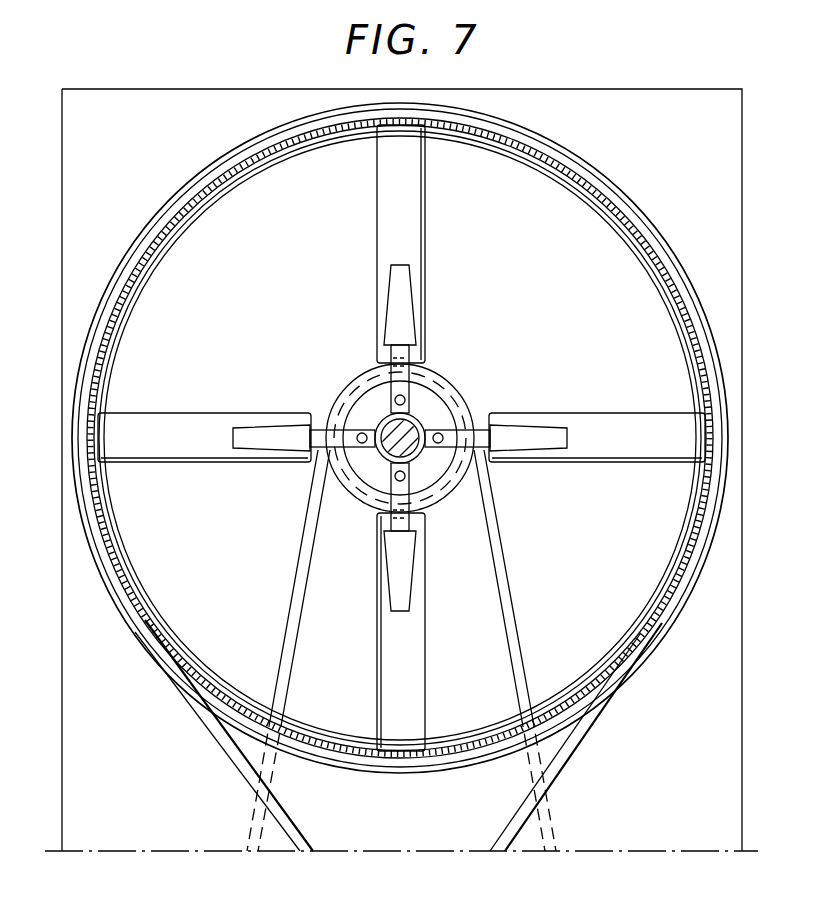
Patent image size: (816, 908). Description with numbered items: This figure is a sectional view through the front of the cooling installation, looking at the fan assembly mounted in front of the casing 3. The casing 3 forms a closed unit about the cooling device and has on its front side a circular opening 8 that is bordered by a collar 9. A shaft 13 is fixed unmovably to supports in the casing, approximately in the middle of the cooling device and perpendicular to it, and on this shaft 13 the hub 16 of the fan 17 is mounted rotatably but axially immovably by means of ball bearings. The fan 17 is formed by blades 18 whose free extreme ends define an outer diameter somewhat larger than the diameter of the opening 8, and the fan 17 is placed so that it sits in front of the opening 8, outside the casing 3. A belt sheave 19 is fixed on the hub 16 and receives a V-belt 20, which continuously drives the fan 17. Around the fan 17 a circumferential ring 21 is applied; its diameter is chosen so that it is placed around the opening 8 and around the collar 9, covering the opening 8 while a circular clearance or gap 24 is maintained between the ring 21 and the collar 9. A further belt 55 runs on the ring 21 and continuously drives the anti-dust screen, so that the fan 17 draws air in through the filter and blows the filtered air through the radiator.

The casing 3 is at (131, 94).
The circular opening 8 is at (207, 224).
The collar 9 is at (227, 166).
The ring 21 is at (605, 207).
The shaft 13 is at (416, 426).
The hub 16 is at (367, 406).
The fan 17 is at (278, 309).
The blades 18 is at (393, 216).
The belt sheave 19 is at (348, 496).
The V-belt 20 is at (300, 573).
The circular clearance or gap 24 is at (622, 652).
The belt 55 is at (238, 760).